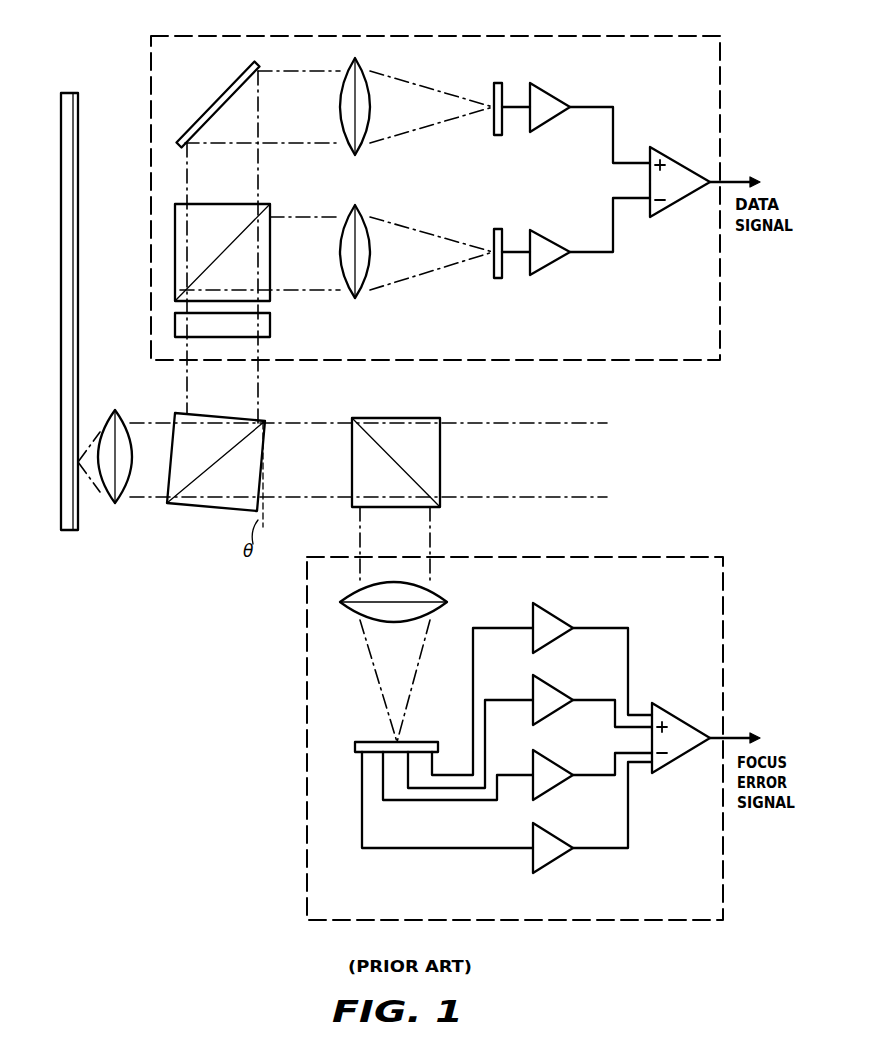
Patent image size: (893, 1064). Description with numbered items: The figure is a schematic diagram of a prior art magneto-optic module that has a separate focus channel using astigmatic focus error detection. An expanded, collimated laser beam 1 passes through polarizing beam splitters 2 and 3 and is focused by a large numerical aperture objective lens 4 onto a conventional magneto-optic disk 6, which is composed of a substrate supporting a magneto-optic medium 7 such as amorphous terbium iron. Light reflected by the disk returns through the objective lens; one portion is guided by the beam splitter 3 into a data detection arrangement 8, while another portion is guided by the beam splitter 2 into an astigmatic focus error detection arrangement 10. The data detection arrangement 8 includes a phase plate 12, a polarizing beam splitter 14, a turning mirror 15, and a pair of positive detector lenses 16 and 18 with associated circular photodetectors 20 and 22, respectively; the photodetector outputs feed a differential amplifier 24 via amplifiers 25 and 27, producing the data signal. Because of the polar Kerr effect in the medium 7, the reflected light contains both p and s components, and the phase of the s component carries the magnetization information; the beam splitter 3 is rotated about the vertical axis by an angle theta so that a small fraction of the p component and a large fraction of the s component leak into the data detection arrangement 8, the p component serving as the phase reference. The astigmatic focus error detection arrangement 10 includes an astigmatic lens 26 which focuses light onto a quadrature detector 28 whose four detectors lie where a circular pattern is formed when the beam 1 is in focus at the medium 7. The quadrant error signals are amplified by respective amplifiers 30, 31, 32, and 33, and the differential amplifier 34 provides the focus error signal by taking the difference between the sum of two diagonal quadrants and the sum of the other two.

The laser beam 1 is at (546, 442).
The polarizing beam splitter 2 is at (416, 418).
The polarizing beam splitter 3 is at (200, 509).
The objective lens 4 is at (125, 488).
The magneto-optic disk 6 is at (82, 285).
The magneto-optic medium 7 is at (78, 289).
The data detection arrangement 8 is at (305, 36).
The astigmatic focus error detection arrangement 10 is at (615, 557).
The phase plate 12 is at (270, 324).
The polarizing beam splitter 14 is at (243, 204).
The turning mirror 15 is at (210, 103).
The positive detector lens 16 is at (368, 128).
The positive detector lens 18 is at (368, 274).
The circular photodetector 20 is at (495, 88).
The circular photodetector 22 is at (495, 236).
The differential amplifier 24 is at (673, 156).
The amplifier 25 is at (553, 97).
The astigmatic lens 26 is at (447, 598).
The amplifier 27 is at (553, 246).
The quadrature detector 28 is at (355, 747).
The amplifier 30 is at (549, 612).
The amplifier 31 is at (548, 690).
The amplifier 32 is at (548, 764).
The amplifier 33 is at (560, 845).
The differential amplifier 34 is at (676, 713).